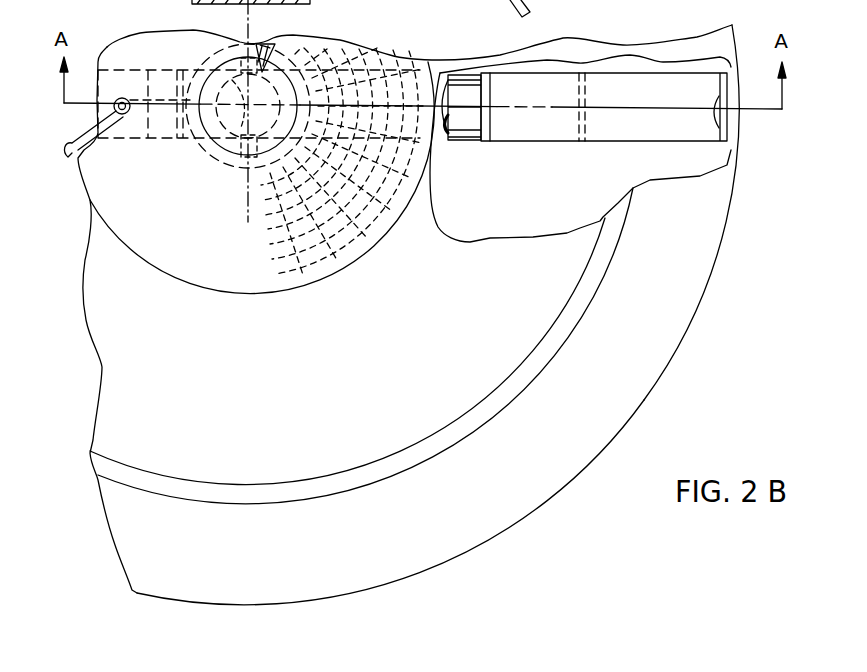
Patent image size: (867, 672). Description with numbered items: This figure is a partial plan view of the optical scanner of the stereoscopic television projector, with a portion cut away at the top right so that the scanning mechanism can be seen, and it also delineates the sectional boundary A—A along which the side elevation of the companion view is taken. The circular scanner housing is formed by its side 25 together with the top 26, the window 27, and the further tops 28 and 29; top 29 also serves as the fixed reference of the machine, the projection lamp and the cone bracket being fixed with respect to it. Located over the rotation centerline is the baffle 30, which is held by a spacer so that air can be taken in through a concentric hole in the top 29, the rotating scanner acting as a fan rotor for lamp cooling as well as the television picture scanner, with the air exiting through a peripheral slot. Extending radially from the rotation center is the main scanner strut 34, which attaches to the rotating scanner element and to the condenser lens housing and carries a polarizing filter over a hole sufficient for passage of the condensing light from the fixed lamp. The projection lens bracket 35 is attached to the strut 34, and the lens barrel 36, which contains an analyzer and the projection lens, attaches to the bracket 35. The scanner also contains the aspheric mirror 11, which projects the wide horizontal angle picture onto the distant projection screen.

The aspheric mirror 11 is at (718, 110).
The side 25 is at (637, 410).
The top 26 is at (520, 493).
The window 27 is at (477, 420).
The top 28 is at (348, 410).
The top 29 is at (183, 250).
The baffle 30 is at (220, 151).
The main scanner strut 34 is at (637, 143).
The projection lens bracket 35 is at (492, 90).
The lens barrel 36 is at (471, 135).